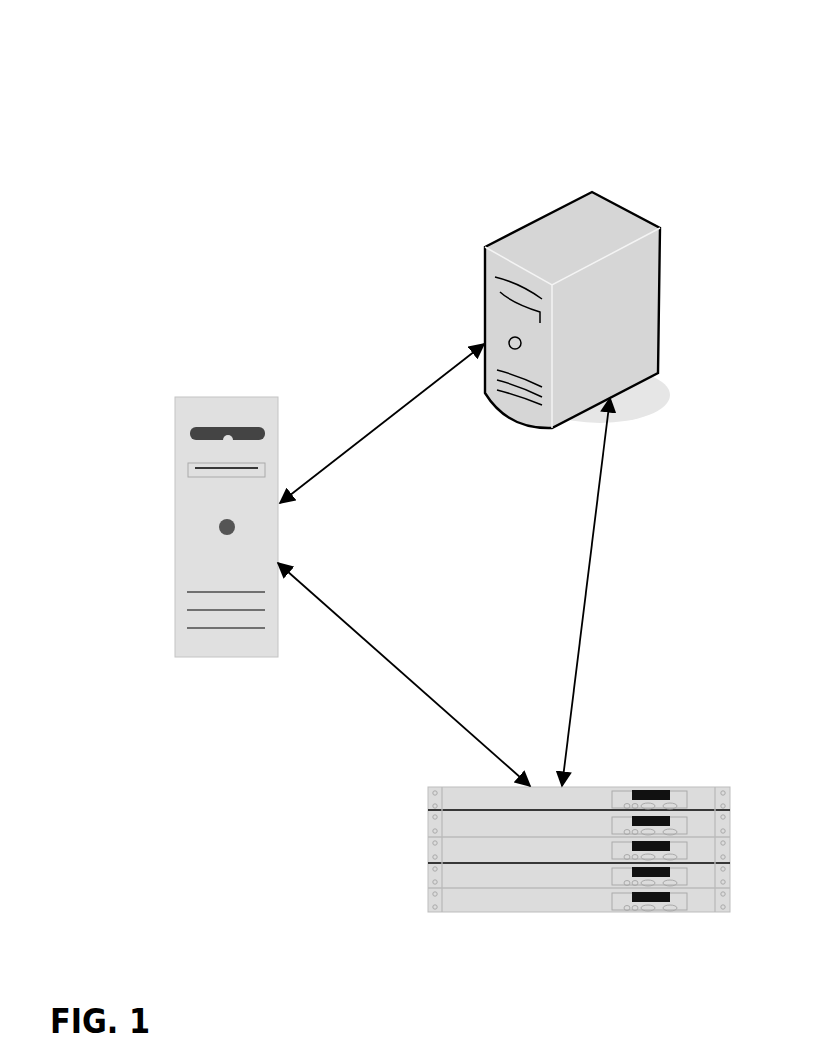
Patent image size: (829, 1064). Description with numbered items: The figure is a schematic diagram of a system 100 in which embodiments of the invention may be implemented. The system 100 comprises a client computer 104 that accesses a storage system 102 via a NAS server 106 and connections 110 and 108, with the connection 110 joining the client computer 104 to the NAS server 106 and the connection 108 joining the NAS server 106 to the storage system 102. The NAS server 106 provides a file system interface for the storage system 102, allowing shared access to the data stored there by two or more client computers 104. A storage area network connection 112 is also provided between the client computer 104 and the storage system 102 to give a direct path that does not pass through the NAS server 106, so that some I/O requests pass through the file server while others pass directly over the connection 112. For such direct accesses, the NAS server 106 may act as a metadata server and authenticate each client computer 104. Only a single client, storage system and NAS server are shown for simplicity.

The system 100 is at (120, 128).
The storage system 102 is at (422, 827).
The client computer 104 is at (557, 208).
The NAS server 106 is at (193, 397).
The connection 108 is at (405, 673).
The connection 110 is at (390, 417).
The storage area network (SAN) connection 112 is at (578, 637).